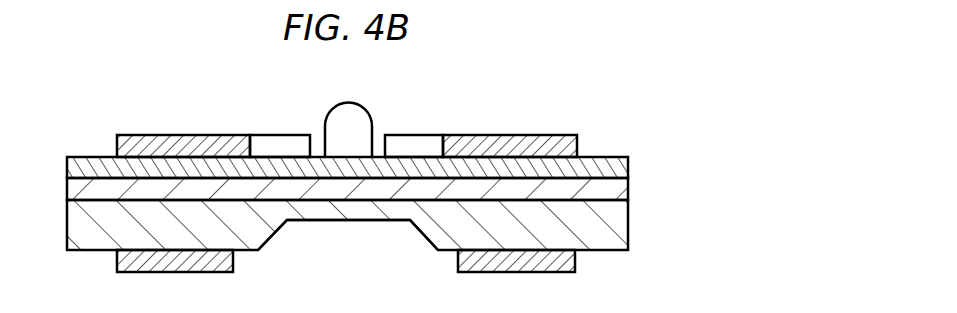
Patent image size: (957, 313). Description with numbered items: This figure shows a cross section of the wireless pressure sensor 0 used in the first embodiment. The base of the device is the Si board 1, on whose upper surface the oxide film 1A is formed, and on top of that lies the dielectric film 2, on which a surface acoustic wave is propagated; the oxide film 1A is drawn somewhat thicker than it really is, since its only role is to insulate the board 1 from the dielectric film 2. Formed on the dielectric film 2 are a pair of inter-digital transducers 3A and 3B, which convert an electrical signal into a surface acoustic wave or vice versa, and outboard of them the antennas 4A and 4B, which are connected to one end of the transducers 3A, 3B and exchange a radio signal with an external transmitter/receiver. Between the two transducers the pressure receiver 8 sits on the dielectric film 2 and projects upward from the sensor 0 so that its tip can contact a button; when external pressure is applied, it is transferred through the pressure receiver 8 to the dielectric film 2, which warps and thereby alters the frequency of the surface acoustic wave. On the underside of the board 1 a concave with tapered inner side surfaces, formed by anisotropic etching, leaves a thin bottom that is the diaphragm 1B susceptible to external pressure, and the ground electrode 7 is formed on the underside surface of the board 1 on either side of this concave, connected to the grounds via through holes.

The pressure sensor 0 is at (702, 68).
The Si board 1 is at (628, 228).
The oxide film 1A is at (628, 183).
The diaphragm 1B is at (325, 222).
The dielectric film 2 is at (628, 157).
The inter-digital transducer 3A is at (292, 140).
The inter-digital transducer 3B is at (418, 140).
The antenna 4A is at (200, 140).
The antenna 4B is at (550, 140).
The ground electrode 7 is at (575, 265).
The pressure receiver 8 is at (347, 113).